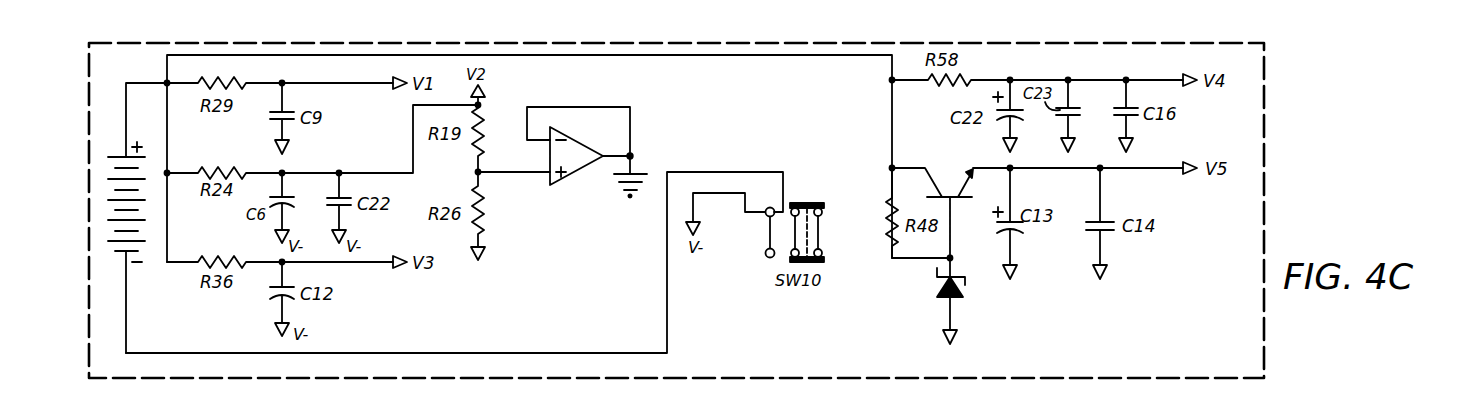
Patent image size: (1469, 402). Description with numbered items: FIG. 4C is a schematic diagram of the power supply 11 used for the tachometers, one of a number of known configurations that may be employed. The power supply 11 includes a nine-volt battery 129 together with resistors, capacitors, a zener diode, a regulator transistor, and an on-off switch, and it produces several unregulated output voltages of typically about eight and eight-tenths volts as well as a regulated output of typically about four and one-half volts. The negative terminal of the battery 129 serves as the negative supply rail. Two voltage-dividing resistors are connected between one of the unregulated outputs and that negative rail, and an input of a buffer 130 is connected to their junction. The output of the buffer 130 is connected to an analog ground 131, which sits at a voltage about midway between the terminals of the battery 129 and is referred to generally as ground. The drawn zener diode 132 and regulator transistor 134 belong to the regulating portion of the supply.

The power supply 11 is at (1264, 84).
The battery 129 is at (120, 157).
The buffer 130 is at (578, 174).
The analog ground 131 is at (613, 186).
The zener diode 132 is at (940, 290).
The transistor 134 is at (949, 182).